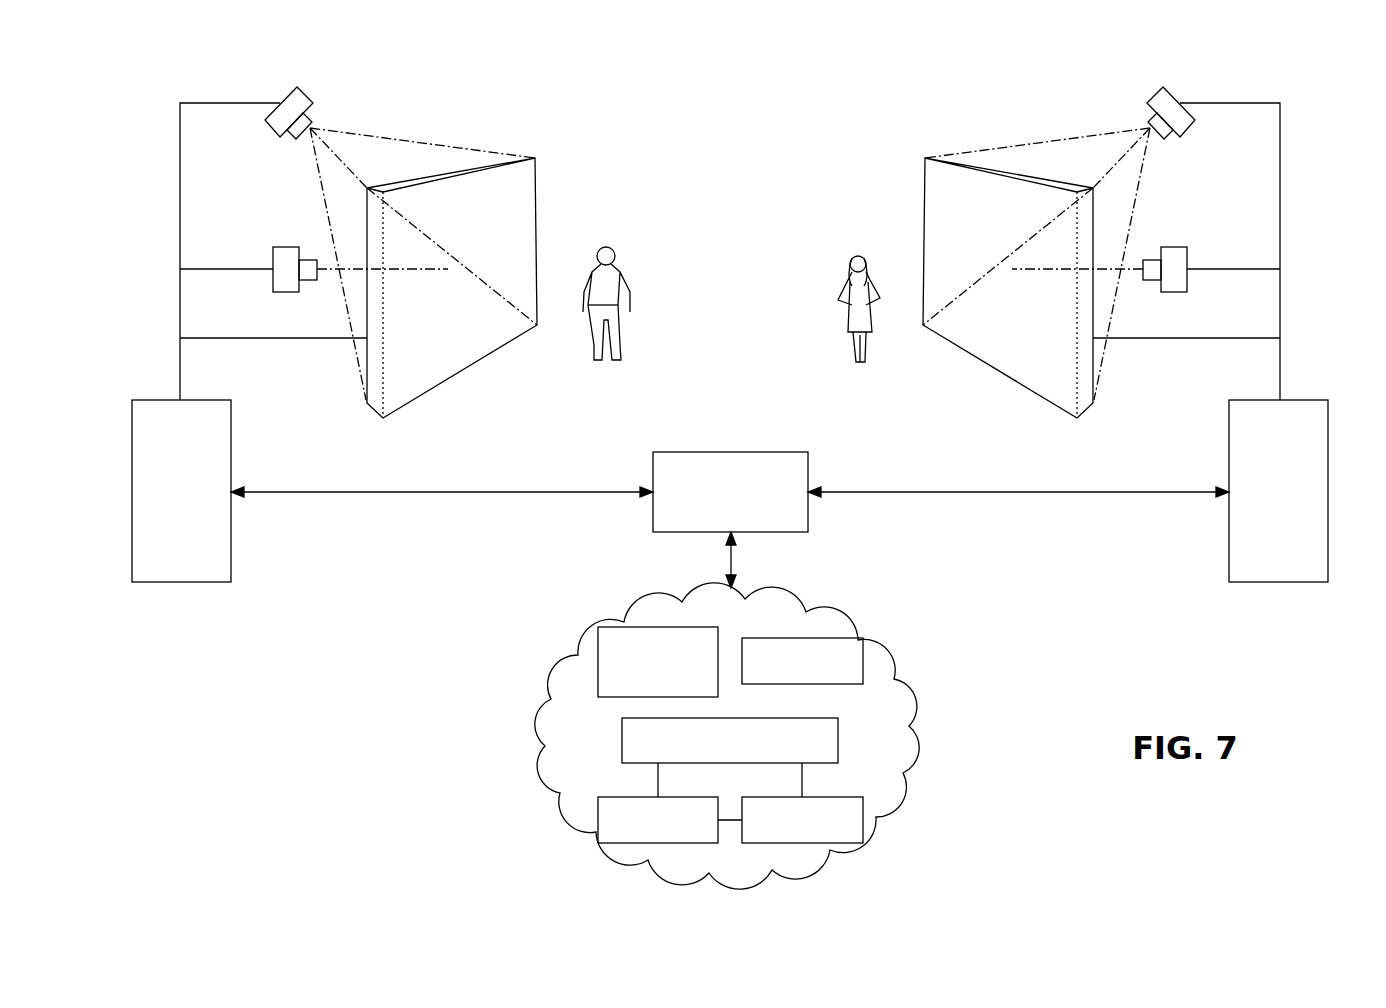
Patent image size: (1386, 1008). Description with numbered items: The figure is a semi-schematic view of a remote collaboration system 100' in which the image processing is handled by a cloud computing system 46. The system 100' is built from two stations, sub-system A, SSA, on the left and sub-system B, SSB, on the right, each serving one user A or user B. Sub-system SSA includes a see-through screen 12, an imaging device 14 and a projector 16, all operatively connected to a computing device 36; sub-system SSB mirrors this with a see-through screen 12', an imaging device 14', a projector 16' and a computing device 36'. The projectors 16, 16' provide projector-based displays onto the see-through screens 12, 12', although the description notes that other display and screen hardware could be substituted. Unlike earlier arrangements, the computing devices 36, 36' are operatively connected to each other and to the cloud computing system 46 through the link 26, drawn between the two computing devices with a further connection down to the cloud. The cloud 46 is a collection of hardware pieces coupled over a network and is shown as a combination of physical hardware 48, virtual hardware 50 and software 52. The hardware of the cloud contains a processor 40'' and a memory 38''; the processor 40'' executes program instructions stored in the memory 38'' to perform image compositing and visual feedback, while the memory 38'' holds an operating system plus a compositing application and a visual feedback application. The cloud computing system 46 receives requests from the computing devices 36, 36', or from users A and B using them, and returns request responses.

The see-through screen 12 is at (495, 288).
The see-through screen 12' is at (963, 288).
The imaging device 14 is at (269, 245).
The imaging device 14' is at (1191, 245).
The projector 16 is at (401, 242).
The projector 16' is at (1059, 242).
The link 26 is at (731, 452).
The computing device 36 is at (223, 491).
The computing device 36' is at (1236, 491).
The memory 38'' is at (859, 820).
The processor 40'' is at (602, 820).
The cloud computing system 46 is at (925, 743).
The physical hardware 48 is at (542, 768).
The virtual hardware 50 is at (542, 673).
The software 52 is at (913, 680).
The remote collaboration system 100' is at (987, 88).
The user A is at (610, 310).
The user B is at (850, 308).
The sub-system A SSA is at (168, 235).
The sub-system B SSB is at (1308, 235).